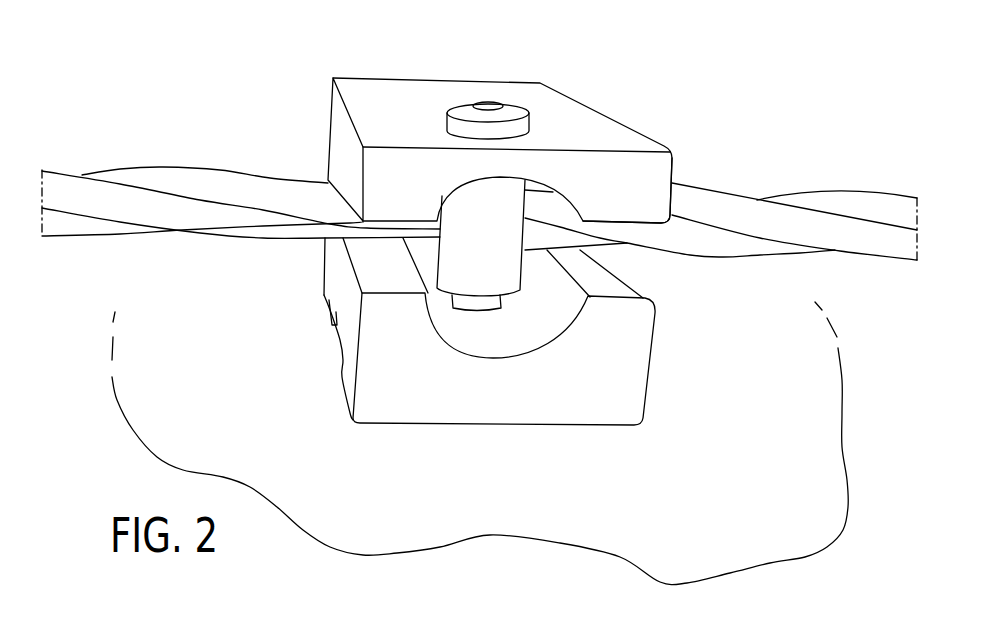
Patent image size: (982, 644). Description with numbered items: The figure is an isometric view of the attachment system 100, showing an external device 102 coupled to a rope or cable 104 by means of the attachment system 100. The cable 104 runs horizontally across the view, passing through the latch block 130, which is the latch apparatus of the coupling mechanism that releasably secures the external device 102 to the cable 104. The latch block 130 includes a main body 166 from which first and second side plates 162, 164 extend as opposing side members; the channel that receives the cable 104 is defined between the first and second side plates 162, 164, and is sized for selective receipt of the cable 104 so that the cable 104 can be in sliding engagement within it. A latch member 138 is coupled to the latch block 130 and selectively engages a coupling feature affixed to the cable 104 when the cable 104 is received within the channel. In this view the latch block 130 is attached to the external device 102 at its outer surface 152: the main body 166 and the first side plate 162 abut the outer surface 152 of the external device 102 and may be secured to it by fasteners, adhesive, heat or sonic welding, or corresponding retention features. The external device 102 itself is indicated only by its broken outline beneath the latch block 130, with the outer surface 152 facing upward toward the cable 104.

The attachment system 100 is at (668, 49).
The external device 102 is at (772, 518).
The cable 104 is at (847, 232).
The latch block 130 is at (395, 92).
The latch member 138 is at (490, 262).
The outer surface 152 is at (303, 452).
The first side plate 162 is at (605, 387).
The second side plate 164 is at (647, 190).
The main body 166 is at (340, 132).